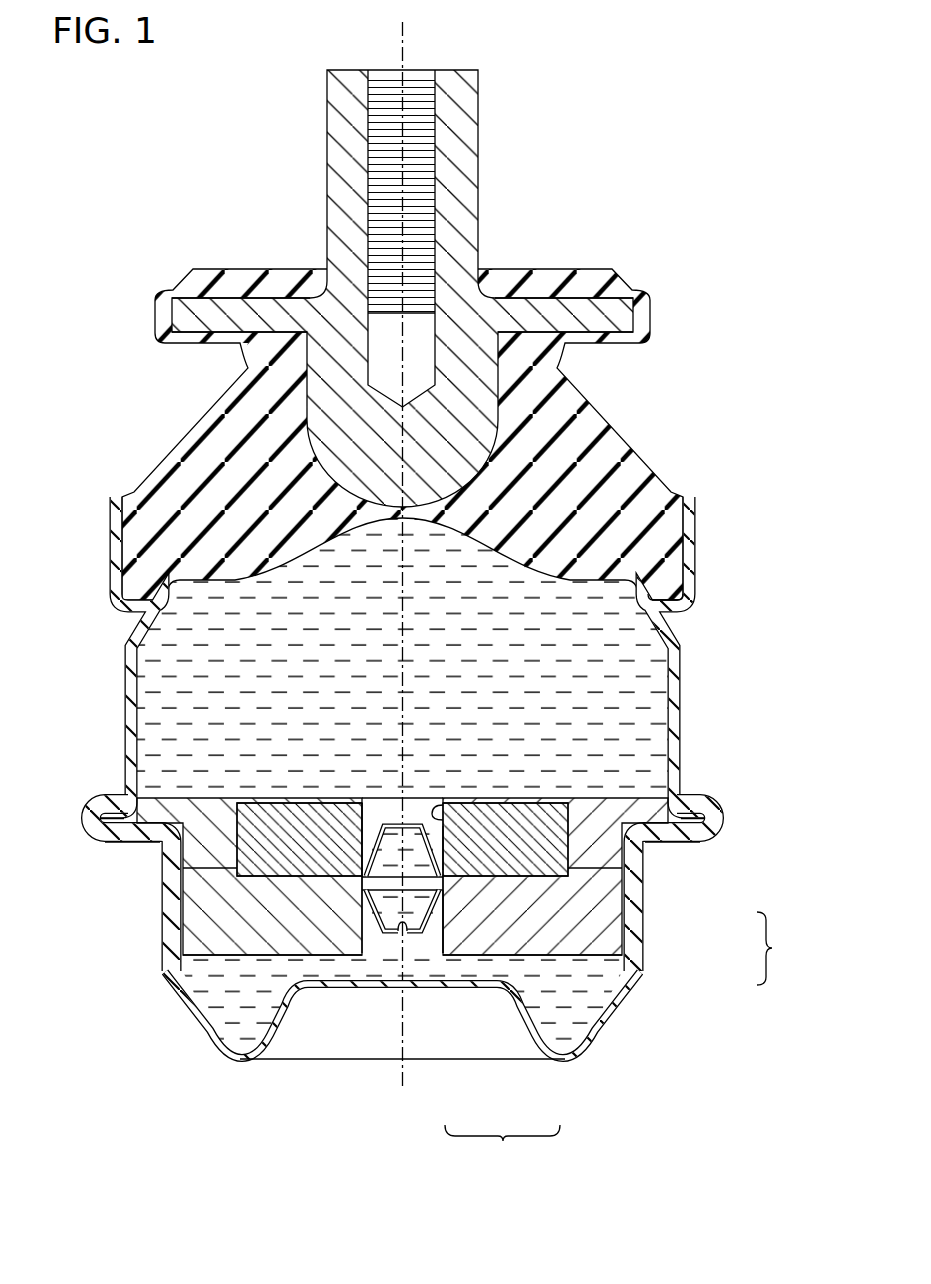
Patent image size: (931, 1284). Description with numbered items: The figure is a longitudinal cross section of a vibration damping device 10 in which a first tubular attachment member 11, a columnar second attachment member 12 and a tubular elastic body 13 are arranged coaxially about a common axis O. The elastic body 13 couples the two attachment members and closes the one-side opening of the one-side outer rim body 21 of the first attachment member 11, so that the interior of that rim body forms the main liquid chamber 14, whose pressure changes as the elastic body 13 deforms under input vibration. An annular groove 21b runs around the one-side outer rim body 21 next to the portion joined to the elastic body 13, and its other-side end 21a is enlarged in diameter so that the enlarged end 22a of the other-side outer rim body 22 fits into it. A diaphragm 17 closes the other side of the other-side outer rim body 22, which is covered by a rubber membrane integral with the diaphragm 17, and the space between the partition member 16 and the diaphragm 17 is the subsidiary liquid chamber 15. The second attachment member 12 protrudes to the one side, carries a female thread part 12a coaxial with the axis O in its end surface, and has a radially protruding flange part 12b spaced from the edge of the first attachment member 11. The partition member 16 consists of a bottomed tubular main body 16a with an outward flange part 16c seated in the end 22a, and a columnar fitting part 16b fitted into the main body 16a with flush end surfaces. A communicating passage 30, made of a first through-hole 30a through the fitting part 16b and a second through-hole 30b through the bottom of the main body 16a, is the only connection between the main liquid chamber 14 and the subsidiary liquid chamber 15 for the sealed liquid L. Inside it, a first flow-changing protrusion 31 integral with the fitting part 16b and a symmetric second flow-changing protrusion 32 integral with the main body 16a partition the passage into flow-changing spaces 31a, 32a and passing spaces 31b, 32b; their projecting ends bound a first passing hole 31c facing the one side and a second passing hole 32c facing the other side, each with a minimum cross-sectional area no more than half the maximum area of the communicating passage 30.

The vibration damping device 10 is at (407, 595).
The first tubular attachment member 11 is at (407, 733).
The second attachment member 12 is at (402, 263).
The female thread part 12a is at (413, 78).
The flange part 12b is at (520, 297).
The elastic body 13 is at (612, 448).
The main liquid chamber 14 is at (604, 686).
The subsidiary liquid chamber 15 is at (582, 1005).
The partition member 16 is at (469, 853).
The main body 16a is at (610, 930).
The fitting part 16b is at (565, 858).
The flange part 16c is at (640, 800).
The diaphragm 17 is at (612, 1022).
The one-side outer rim body 21 is at (402, 667).
The end of the one-side outer rim body 21a is at (86, 808).
The annular groove 21b is at (663, 612).
The other-side outer rim body 22 is at (450, 887).
The end of the other-side outer rim body 22a is at (719, 812).
The communicating passage 30 is at (496, 988).
The first through-hole 30a is at (446, 812).
The second through-hole 30b is at (448, 838).
The first flow-changing protrusion 31 is at (239, 808).
The flow-changing space 31a is at (399, 823).
The passing space 31b is at (390, 844).
The first passing hole 31c is at (372, 818).
The second flow-changing protrusion 32 is at (332, 999).
The flow-changing space 32a is at (365, 928).
The passing space 32b is at (369, 893).
The second passing hole 32c is at (401, 936).
The liquid L is at (197, 637).
The axis O is at (400, 44).